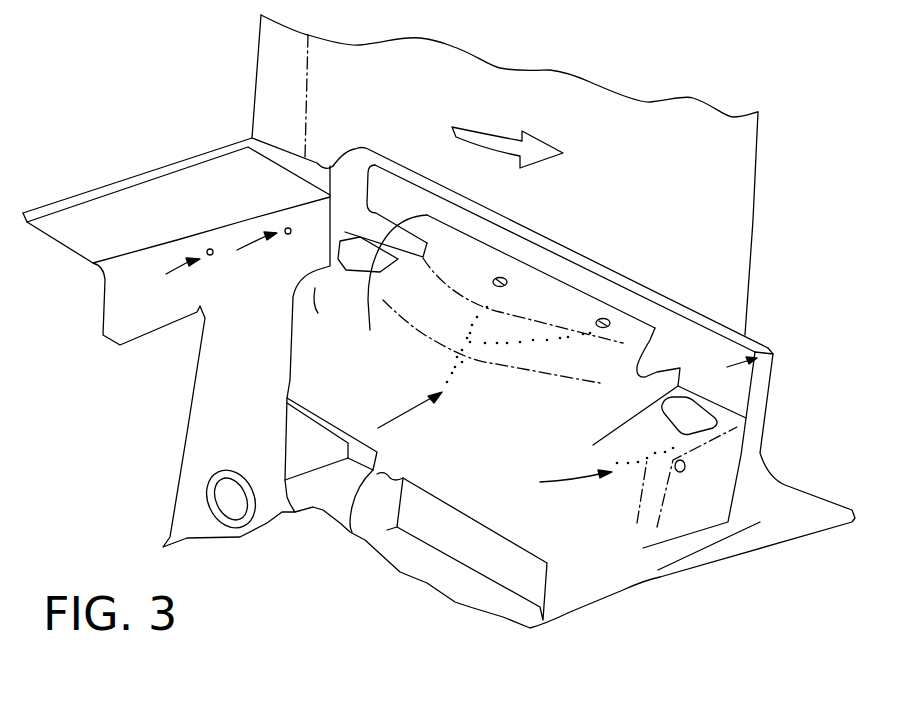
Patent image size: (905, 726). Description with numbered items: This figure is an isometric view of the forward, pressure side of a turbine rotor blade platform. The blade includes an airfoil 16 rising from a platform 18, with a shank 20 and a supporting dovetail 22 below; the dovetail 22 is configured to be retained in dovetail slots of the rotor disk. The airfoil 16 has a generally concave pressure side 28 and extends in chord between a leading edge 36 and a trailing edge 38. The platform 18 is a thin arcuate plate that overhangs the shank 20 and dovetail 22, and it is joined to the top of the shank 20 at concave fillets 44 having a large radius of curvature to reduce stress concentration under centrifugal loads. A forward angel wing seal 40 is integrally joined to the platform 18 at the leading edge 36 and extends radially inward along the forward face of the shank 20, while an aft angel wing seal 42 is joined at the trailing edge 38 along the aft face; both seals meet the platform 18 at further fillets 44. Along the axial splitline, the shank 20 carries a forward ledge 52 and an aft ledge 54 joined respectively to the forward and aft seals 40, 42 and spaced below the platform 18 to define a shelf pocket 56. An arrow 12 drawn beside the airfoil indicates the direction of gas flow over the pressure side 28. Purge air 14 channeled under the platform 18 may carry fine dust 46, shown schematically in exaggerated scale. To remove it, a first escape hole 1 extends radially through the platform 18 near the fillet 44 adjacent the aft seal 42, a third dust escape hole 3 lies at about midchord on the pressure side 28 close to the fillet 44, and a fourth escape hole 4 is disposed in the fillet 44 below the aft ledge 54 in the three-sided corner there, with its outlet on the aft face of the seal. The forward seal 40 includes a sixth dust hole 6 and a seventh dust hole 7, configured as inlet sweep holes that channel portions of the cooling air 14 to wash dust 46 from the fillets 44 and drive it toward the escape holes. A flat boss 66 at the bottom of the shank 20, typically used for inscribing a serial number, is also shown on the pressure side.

The first escape hole 1 is at (594, 323).
The third dust escape hole 3 is at (494, 277).
The fourth escape hole 4 is at (684, 459).
The sixth dust hole 6 is at (292, 238).
The seventh dust hole 7 is at (213, 256).
The direction arrow 12 is at (480, 130).
The purge air 14 is at (393, 420).
The airfoil 16 is at (595, 83).
The platform 18 is at (707, 320).
The shank 20 is at (213, 392).
The dovetail 22 is at (167, 543).
The pressure side 28 is at (615, 157).
The leading edge 36 is at (305, 93).
The trailing edge 38 is at (757, 163).
The forward angel wing seal 40 is at (132, 173).
The aft angel wing seal 42 is at (767, 403).
The fillets 44 is at (433, 312).
The dust 46 is at (463, 370).
The forward ledge 52 is at (412, 245).
The aft ledge 54 is at (705, 392).
The shelf pocket 56 is at (773, 355).
The flat boss 66 is at (490, 554).